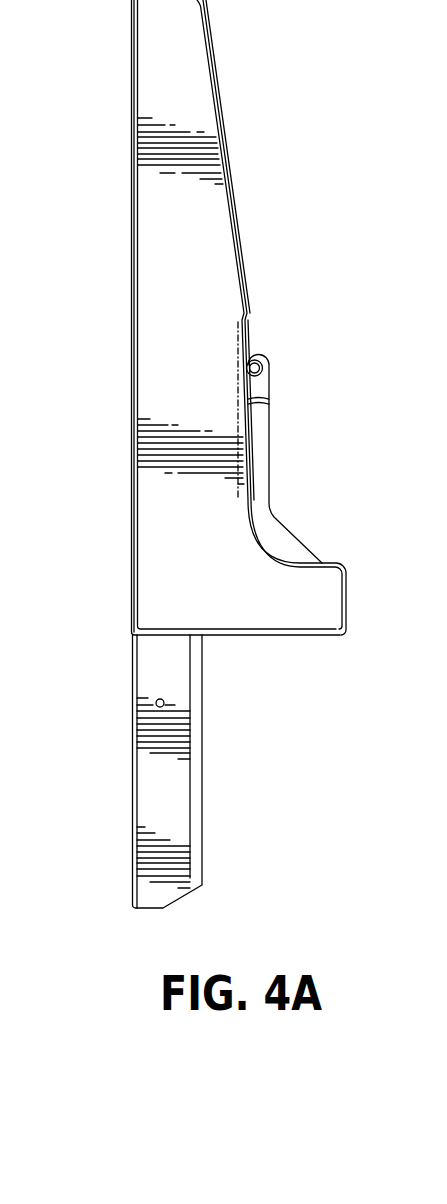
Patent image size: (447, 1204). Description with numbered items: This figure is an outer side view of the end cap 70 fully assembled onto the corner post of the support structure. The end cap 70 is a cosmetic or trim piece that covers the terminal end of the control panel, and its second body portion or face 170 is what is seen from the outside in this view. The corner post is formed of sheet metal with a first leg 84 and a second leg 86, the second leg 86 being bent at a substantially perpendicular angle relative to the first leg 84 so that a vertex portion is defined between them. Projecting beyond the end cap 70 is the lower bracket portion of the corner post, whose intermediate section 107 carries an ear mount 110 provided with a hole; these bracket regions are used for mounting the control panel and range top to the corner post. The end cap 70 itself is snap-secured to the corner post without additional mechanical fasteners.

The end cap 70 is at (259, 91).
The second body portion or face 170 is at (200, 250).
The ear mount 110 is at (268, 383).
The intermediate section 107 is at (261, 447).
The second leg 86 is at (177, 797).
The first leg 84 is at (132, 803).